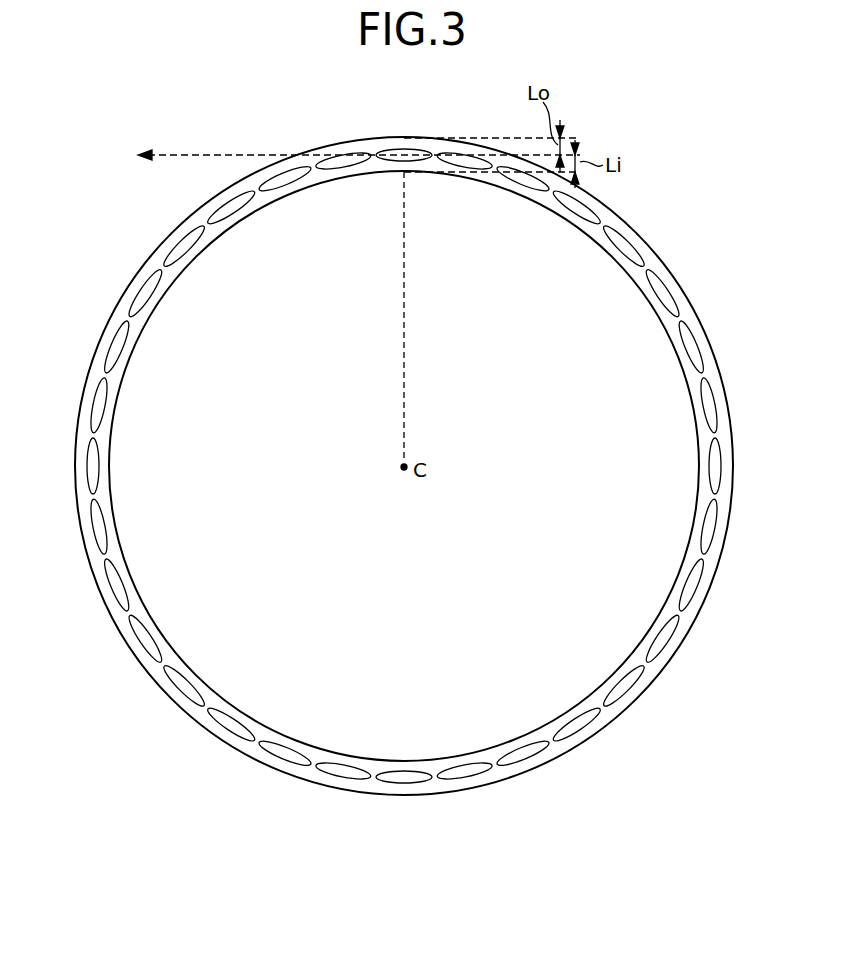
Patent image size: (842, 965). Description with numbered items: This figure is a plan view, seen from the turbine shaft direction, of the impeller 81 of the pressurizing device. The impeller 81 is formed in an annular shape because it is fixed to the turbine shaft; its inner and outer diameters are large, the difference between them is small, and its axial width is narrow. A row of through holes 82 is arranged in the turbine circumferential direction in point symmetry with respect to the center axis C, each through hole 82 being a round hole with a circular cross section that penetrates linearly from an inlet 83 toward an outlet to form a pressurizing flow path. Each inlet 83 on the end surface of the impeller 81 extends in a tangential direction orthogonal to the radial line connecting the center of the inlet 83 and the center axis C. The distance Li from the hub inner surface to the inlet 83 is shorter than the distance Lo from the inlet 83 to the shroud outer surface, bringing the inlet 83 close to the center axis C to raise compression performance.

The impeller 81 is at (143, 680).
The through hole 82 is at (135, 614).
The inlet 83 is at (404, 153).